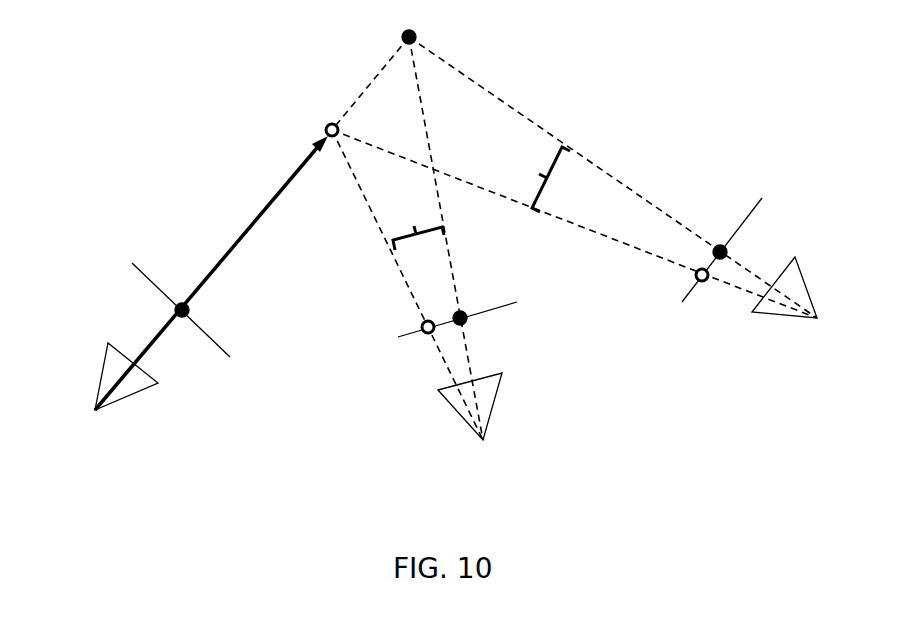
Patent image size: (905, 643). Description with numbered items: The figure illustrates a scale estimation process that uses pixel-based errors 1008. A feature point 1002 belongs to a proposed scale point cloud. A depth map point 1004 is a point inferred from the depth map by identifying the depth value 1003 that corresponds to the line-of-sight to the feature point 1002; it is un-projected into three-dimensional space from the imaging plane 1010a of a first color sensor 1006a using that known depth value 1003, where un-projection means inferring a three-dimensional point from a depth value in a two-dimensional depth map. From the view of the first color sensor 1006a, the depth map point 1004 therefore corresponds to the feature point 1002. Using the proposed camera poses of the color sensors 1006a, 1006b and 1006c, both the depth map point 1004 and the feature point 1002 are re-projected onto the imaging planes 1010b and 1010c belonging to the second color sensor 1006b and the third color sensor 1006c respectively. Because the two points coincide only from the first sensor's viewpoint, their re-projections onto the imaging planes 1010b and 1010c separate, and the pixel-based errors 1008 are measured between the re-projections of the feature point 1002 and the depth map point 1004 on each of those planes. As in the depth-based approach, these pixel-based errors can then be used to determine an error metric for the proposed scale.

The feature point 1002 is at (400, 37).
The depth value 1003 is at (264, 210).
The depth map point 1004 is at (325, 131).
The first color sensor 1006a is at (138, 393).
The second color sensor 1006b is at (493, 400).
The third color sensor 1006c is at (780, 318).
The pixel-based errors 1008 is at (477, 193).
The imaging plane of first color sensor 1010a is at (136, 270).
The imaging plane of second color sensor 1010b is at (511, 304).
The imaging plane of third color sensor 1010c is at (754, 208).